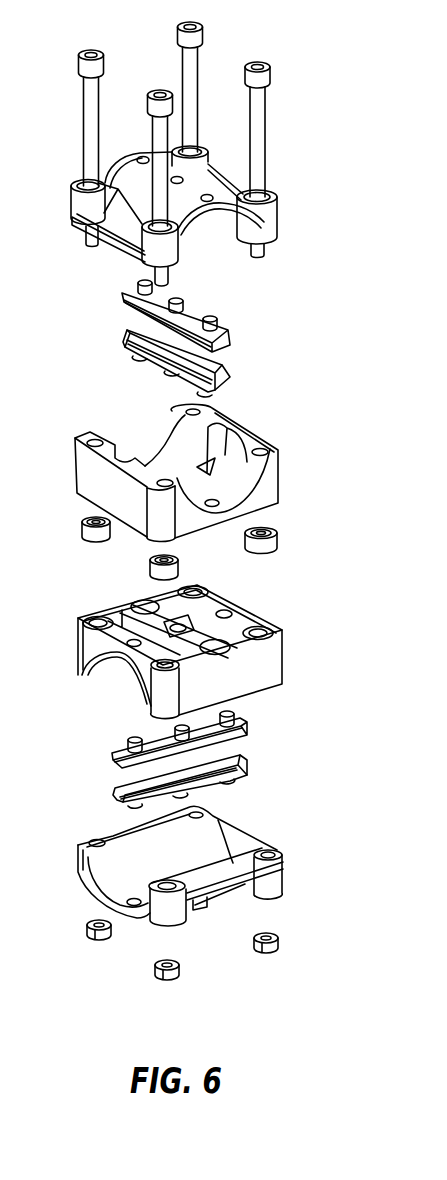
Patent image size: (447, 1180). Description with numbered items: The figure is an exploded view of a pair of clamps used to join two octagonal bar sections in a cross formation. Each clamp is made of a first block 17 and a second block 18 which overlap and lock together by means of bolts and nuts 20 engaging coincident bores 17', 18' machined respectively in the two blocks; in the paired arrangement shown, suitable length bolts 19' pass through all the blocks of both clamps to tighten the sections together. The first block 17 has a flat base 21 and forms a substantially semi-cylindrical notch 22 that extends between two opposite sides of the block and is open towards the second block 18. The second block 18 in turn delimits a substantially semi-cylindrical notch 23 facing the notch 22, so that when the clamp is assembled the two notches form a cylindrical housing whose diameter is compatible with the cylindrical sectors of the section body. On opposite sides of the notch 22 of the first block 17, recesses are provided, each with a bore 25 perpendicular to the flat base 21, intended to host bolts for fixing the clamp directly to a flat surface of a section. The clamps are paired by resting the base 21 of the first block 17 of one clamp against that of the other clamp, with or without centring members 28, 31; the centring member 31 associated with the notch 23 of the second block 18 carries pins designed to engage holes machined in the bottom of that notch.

The first block 17 is at (216, 536).
The coincident bores 17' is at (219, 652).
The second block 18 is at (148, 522).
The coincident bores 18' is at (215, 866).
The suitable length bolts 19' is at (179, 154).
The nuts 20 is at (95, 936).
The flat base 21 is at (273, 510).
The semi-cylindrical notch 22 is at (162, 452).
The semi-cylindrical notch 23 is at (217, 226).
The bore 25 is at (228, 610).
The centring member 28 is at (228, 376).
The centring member 31 is at (230, 335).